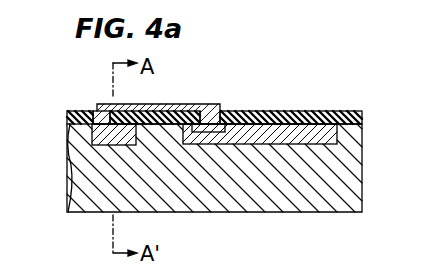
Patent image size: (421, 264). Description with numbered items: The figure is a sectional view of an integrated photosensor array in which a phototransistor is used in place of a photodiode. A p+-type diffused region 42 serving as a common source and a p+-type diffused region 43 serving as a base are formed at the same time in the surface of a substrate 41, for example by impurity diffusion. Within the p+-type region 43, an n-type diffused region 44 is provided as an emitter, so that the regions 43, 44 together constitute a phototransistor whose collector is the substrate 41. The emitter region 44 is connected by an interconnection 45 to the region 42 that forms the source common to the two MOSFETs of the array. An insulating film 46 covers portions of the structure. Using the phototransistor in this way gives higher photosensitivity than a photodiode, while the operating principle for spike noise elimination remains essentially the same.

The substrate 41 is at (217, 212).
The p+-type diffused region 42 is at (94, 137).
The p+-type diffused region 43 is at (338, 137).
The n-type diffused region 44 is at (247, 111).
The interconnection 45 is at (205, 104).
The insulating film 46 is at (158, 111).